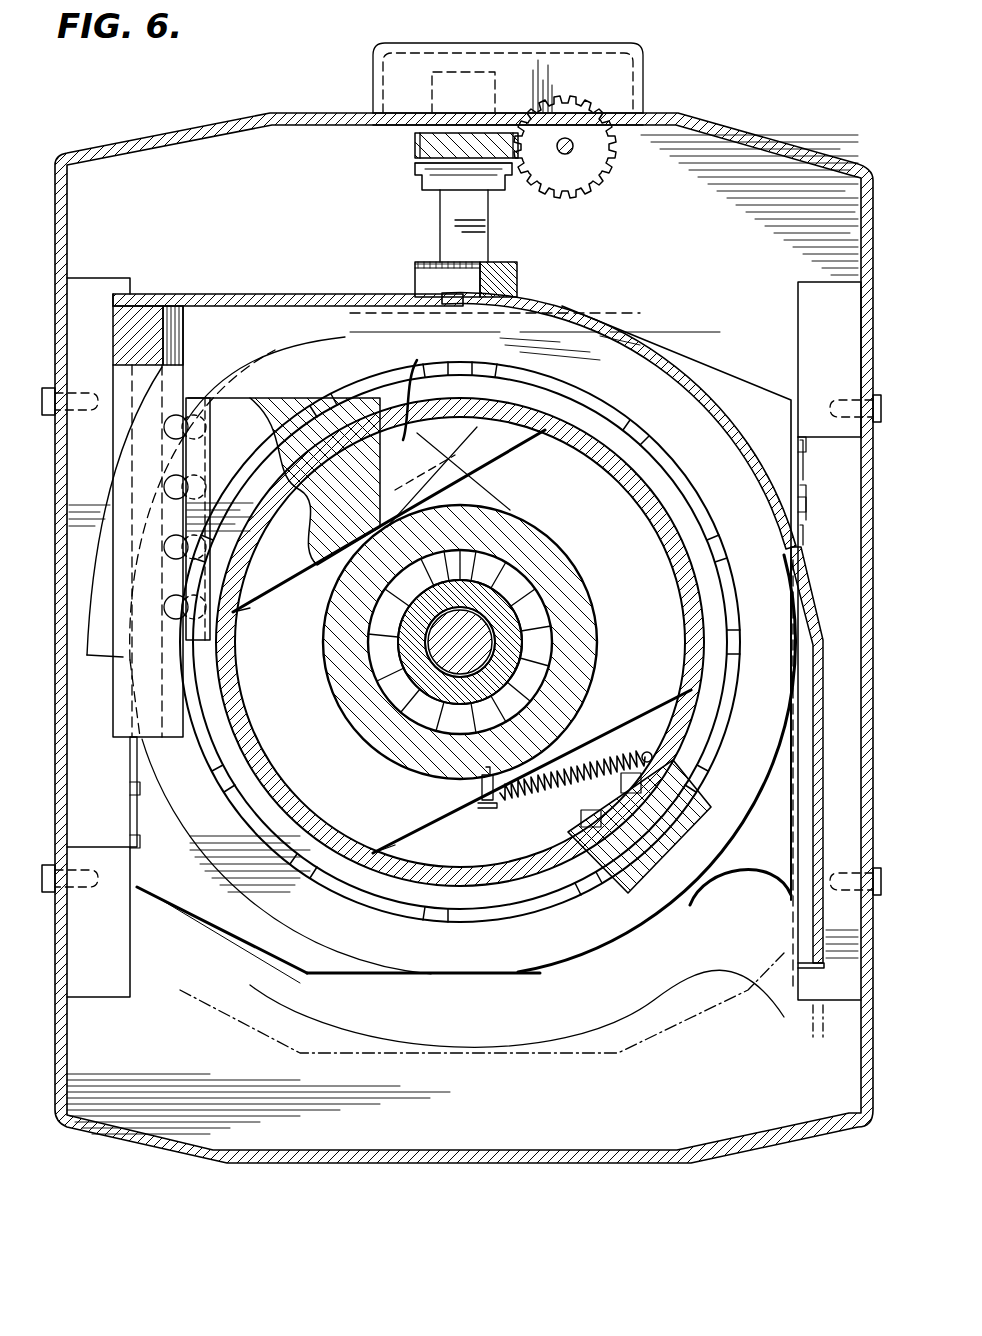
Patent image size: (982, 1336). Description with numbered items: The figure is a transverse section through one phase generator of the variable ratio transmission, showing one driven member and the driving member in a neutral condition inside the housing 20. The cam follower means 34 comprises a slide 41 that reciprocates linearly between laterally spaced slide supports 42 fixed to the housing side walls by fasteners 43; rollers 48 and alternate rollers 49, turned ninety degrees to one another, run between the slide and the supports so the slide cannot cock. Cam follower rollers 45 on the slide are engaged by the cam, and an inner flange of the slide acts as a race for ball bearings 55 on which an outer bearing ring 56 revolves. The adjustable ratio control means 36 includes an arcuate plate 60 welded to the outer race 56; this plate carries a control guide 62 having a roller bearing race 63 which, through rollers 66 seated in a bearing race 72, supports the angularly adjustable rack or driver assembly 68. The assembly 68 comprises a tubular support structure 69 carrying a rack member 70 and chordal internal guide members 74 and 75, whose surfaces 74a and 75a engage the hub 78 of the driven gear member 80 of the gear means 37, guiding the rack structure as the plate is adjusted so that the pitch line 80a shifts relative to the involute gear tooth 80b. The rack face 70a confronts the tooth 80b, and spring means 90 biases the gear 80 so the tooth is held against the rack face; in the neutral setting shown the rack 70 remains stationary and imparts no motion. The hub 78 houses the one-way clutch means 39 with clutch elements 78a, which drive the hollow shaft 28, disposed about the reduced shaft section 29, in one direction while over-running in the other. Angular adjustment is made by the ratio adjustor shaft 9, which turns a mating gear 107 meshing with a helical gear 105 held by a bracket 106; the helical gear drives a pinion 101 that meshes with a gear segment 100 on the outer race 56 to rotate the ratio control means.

The housing 20 is at (743, 132).
The ratio adjustor shaft 9 is at (573, 147).
The mating gear 107 is at (590, 186).
The helical gear 105 is at (413, 150).
The bracket 106 is at (418, 172).
The gear segment 100 is at (455, 275).
The pinion 101 is at (519, 284).
The control guide or support 62 is at (143, 318).
The roller bearing race 63 is at (183, 332).
The adjustable ratio control means 36 is at (637, 326).
The cam follower means 34 is at (687, 330).
The arcuate plate 60 is at (697, 377).
The slide 41 is at (757, 390).
The fastener 43 is at (41, 400).
The roller 48 is at (127, 788).
The slide support 42 is at (845, 493).
The roller 49 is at (128, 842).
The tubular support structure 69 is at (648, 448).
The chordal internal guide member 74 is at (518, 447).
The driven gear member 80 is at (504, 503).
The one-way clutch means 39 is at (559, 592).
The hub 78 is at (583, 597).
The hollow shaft 28 is at (517, 662).
The chordal internal guide member 75 is at (638, 717).
The ball bearings 55 is at (740, 644).
The outer bearing ring or race 56 is at (773, 703).
The cam follower roller 45 is at (701, 738).
The spring means 90 is at (537, 792).
The gear means 37 is at (369, 755).
The clutch element 78a is at (407, 708).
The guide surface 75a is at (418, 837).
The guide surface 74a is at (237, 612).
The bearing race 72 is at (203, 570).
The rack member 70 is at (244, 476).
The rack face 70a is at (382, 462).
The pitch line 80a is at (388, 472).
The involute gear tooth 80b is at (391, 390).
The rack or driver assembly 68 is at (315, 393).
The rollers 66 is at (200, 423).
The reduced shaft section 29 is at (472, 656).